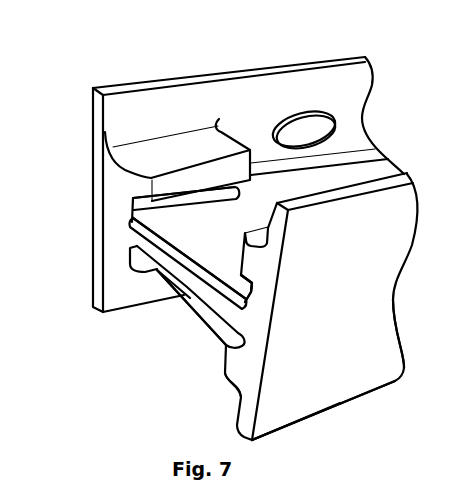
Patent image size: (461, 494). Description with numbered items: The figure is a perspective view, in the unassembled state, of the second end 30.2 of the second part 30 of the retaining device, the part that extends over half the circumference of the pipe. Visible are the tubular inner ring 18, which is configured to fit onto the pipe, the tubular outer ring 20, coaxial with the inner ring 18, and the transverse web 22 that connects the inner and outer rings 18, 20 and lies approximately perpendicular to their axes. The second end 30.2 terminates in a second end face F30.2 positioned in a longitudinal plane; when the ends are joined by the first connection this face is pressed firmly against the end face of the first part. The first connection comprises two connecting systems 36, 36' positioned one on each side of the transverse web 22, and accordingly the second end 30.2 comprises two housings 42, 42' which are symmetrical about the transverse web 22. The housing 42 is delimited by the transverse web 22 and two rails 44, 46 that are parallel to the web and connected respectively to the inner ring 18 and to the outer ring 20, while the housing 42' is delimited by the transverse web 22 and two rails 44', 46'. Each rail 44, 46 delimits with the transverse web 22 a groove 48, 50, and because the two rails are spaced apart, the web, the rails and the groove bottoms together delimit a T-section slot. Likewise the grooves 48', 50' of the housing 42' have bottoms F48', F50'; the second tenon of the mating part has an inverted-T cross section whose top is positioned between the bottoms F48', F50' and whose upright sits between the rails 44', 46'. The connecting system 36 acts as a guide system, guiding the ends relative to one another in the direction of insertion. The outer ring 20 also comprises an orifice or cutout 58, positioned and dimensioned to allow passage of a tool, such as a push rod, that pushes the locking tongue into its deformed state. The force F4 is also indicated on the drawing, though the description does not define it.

The inner ring 18 is at (380, 353).
The outer ring 20 is at (190, 77).
The transverse web 22 is at (360, 172).
The second part 30 is at (82, 105).
The second end 30.2 is at (337, 390).
The guide system 36 is at (141, 297).
The connecting system 36' is at (146, 252).
The housing 42 is at (180, 331).
The housing 42' is at (142, 239).
The rail 44 is at (144, 325).
The rail 44' is at (246, 121).
The rail 46 is at (190, 392).
The rail 46' is at (340, 306).
The groove 48 is at (91, 263).
The groove 48' is at (205, 128).
The groove 50 is at (329, 233).
The groove 50' is at (308, 306).
The cutout 58 is at (317, 115).
The force F4 is at (426, 335).
The bottom of groove F48' is at (185, 225).
The bottom of groove F50' is at (342, 281).
The second end face F30.2 is at (252, 352).